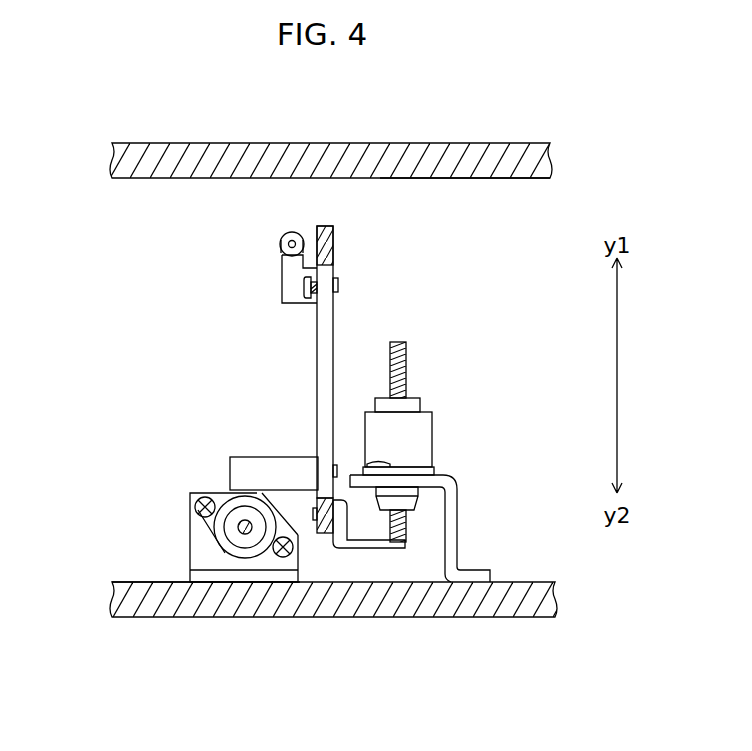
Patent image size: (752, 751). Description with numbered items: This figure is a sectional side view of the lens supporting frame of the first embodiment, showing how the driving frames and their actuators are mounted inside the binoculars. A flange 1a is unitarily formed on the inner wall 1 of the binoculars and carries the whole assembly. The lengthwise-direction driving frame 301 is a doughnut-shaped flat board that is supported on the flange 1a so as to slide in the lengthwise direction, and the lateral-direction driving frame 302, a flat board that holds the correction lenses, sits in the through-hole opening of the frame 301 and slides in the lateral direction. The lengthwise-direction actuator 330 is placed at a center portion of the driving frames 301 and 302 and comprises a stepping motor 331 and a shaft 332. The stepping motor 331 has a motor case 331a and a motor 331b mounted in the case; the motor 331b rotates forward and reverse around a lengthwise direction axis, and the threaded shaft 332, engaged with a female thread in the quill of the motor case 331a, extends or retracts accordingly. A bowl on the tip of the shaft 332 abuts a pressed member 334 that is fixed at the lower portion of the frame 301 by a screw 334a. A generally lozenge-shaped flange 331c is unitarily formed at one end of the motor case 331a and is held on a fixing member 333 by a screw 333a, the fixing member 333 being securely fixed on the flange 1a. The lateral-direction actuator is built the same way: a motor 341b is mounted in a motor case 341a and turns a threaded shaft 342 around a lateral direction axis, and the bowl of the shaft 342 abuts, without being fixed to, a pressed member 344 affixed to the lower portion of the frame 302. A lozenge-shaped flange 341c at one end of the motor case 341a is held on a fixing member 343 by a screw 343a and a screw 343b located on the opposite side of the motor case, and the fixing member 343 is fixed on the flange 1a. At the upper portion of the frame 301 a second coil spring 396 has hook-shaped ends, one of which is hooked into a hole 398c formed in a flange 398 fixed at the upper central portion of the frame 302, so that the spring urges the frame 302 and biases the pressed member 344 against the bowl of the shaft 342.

The inner wall 1 is at (419, 139).
The flange 1a is at (466, 178).
The lengthwise-direction driving frame 301 is at (333, 240).
The lateral-direction driving frame 302 is at (333, 308).
The lengthwise-direction actuator 330 is at (440, 337).
The stepping motor 331 is at (464, 431).
The motor case 331a is at (430, 423).
The motor 331b is at (420, 406).
The flange 331c is at (420, 468).
The shaft 332 is at (407, 358).
The fixing member 333 is at (457, 524).
The screw 333a is at (372, 462).
The pressed member 334 is at (392, 548).
The screw 334a is at (325, 535).
The motor case 341a is at (258, 560).
The motor 341b is at (233, 535).
The flange 341c is at (237, 528).
The shaft 342 is at (232, 508).
The fixing member 343 is at (198, 543).
The screw 343a is at (190, 507).
The screw 343b is at (286, 558).
The pressed member 344 is at (250, 457).
The second coil spring 396 is at (280, 244).
The flange 398 is at (293, 284).
The hole 398c is at (282, 252).